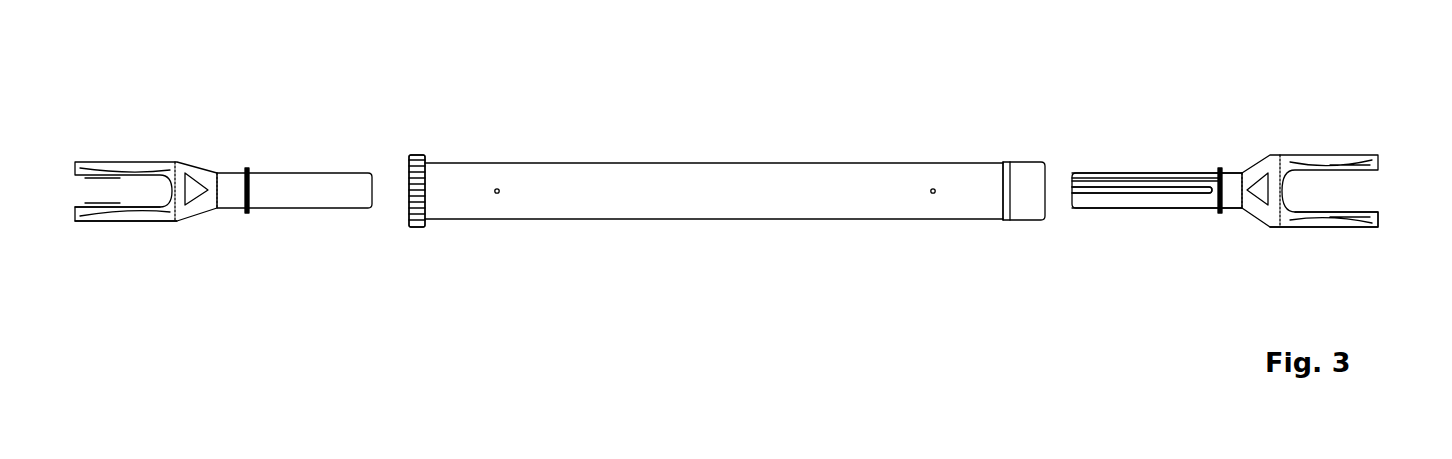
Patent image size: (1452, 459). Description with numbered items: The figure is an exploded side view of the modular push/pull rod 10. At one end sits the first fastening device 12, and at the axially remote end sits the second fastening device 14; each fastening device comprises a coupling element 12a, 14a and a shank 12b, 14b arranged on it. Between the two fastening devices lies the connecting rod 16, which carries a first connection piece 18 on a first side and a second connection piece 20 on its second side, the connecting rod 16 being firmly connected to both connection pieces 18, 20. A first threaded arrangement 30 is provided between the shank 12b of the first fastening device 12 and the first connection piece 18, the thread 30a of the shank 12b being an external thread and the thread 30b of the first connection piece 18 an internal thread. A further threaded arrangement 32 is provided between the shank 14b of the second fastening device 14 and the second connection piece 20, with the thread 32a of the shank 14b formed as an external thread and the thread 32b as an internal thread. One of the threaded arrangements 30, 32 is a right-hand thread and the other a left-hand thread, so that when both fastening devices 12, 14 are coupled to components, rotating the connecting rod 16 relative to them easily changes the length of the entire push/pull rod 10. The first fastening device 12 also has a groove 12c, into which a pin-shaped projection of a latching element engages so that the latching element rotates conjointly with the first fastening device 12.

The push/pull rod 10 is at (826, 301).
The first fastening device 12 is at (1325, 140).
The coupling element 12a is at (1380, 225).
The shank 12b is at (1193, 210).
The groove 12c is at (1148, 197).
The second fastening device 14 is at (135, 150).
The coupling element 14a is at (106, 222).
The shank 14b is at (232, 187).
The connecting rod 16 is at (775, 180).
The first connection piece 18 is at (1030, 215).
The second connection piece 20 is at (419, 228).
The first threaded arrangement 30 is at (1213, 73).
The thread 30a is at (1204, 177).
The thread 30b is at (1047, 183).
The threaded arrangement 32 is at (410, 60).
The thread 32a is at (305, 185).
The thread 32b is at (407, 188).